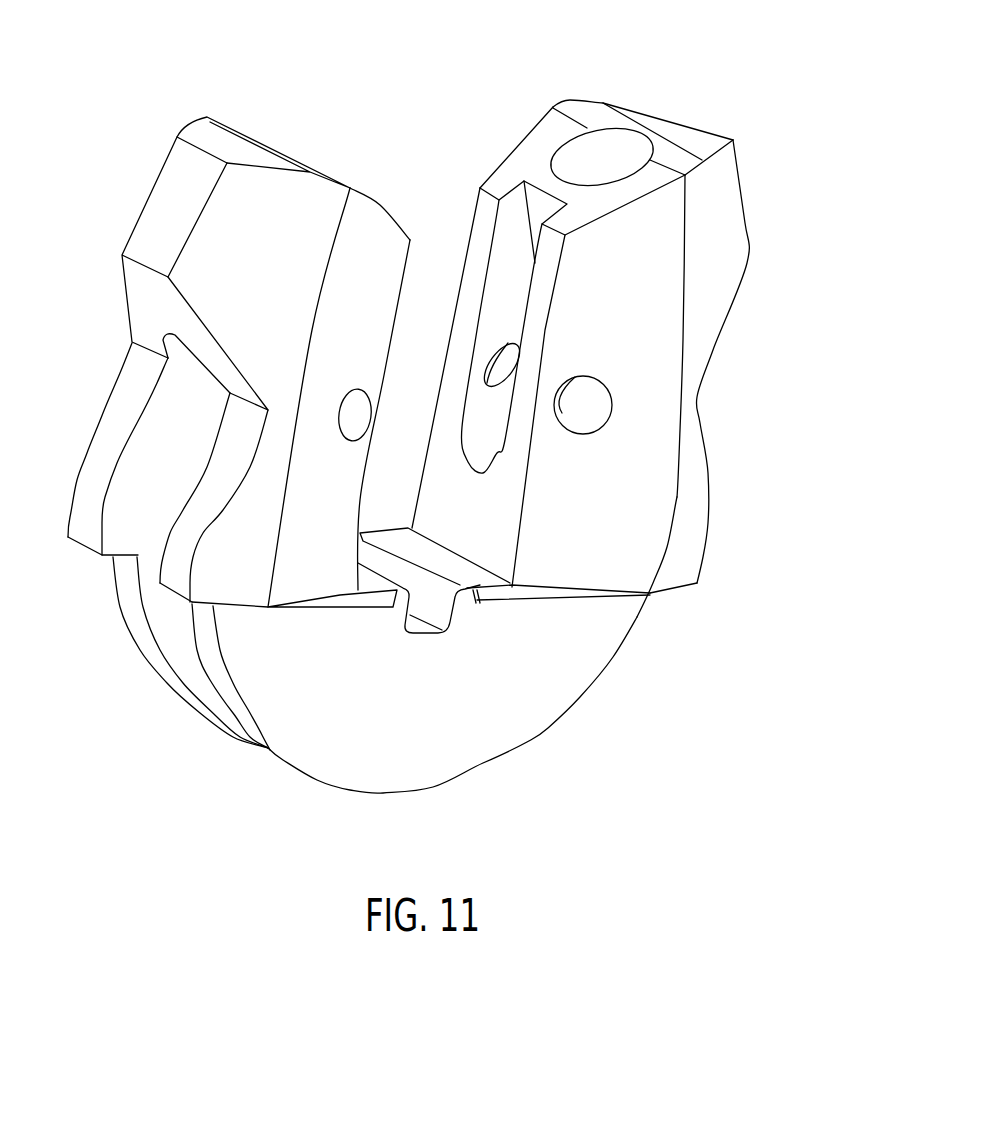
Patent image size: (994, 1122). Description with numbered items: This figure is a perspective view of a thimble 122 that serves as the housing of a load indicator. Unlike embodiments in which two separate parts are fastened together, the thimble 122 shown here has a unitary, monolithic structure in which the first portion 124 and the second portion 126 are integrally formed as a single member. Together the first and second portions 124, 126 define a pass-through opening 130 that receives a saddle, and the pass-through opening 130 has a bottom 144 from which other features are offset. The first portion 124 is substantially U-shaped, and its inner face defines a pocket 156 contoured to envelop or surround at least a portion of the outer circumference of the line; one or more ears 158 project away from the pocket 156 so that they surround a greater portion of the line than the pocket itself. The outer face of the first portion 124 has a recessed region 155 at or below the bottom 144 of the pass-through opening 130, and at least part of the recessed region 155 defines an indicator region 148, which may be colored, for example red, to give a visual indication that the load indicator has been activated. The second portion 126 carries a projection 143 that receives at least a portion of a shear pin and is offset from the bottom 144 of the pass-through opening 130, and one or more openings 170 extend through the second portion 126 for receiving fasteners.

The thimble 122 is at (463, 64).
The pass-through opening 130 is at (430, 252).
The first portion 124 is at (535, 157).
The pocket 156 is at (610, 155).
The ears 158 is at (720, 207).
The second portion 126 is at (610, 200).
The openings 170 is at (590, 412).
The recessed region 155 is at (717, 617).
The indicator region 148 is at (565, 663).
The projection 143 is at (484, 455).
The bottom 144 is at (467, 575).